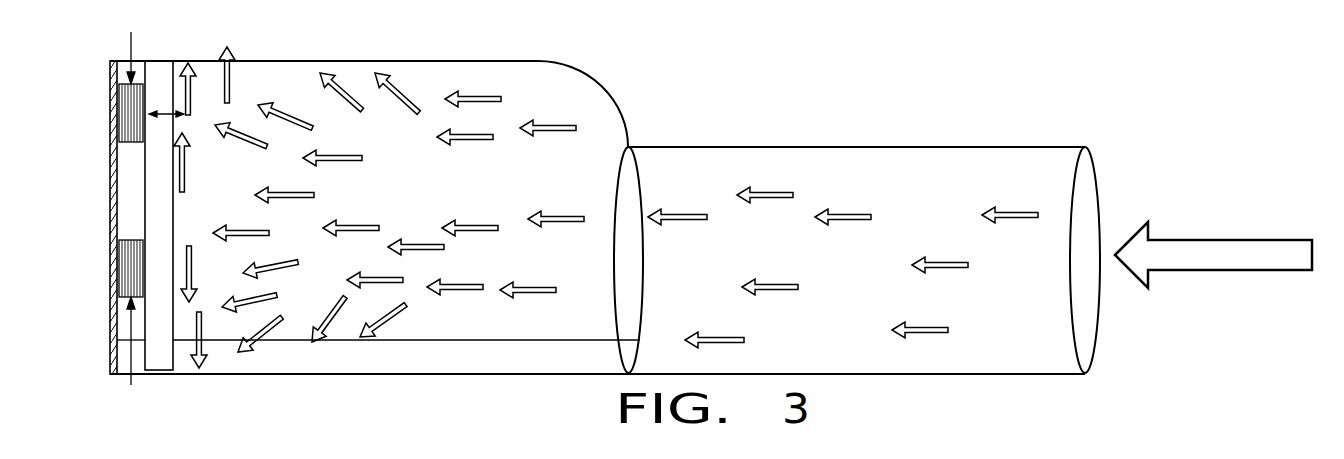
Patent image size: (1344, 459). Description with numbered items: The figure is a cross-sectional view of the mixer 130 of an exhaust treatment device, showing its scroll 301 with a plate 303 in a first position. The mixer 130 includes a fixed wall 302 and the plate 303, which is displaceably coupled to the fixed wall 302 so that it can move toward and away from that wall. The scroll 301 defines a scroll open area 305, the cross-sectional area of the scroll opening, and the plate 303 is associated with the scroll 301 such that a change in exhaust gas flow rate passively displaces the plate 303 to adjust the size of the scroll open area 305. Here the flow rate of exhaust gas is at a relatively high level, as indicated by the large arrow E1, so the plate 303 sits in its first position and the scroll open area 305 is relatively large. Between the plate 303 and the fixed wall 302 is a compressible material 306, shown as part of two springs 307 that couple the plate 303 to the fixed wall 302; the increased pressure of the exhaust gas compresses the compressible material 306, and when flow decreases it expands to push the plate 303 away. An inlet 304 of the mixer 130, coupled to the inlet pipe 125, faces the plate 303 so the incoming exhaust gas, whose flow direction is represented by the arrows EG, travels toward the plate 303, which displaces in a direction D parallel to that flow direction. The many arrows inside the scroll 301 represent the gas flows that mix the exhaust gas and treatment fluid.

The mixer 130 is at (653, 102).
The inlet pipe 125 is at (808, 147).
The scroll 301 is at (582, 72).
The fixed wall 302 is at (108, 180).
The plate 303 is at (162, 72).
The inlet 304 is at (642, 193).
The scroll open area 305 is at (428, 173).
The compressible material 306 is at (130, 105).
The springs 307 is at (130, 208).
The direction D is at (170, 118).
The flow direction of exhaust gas EG is at (898, 325).
The arrow indicating high exhaust gas flow rate E1 is at (1210, 240).